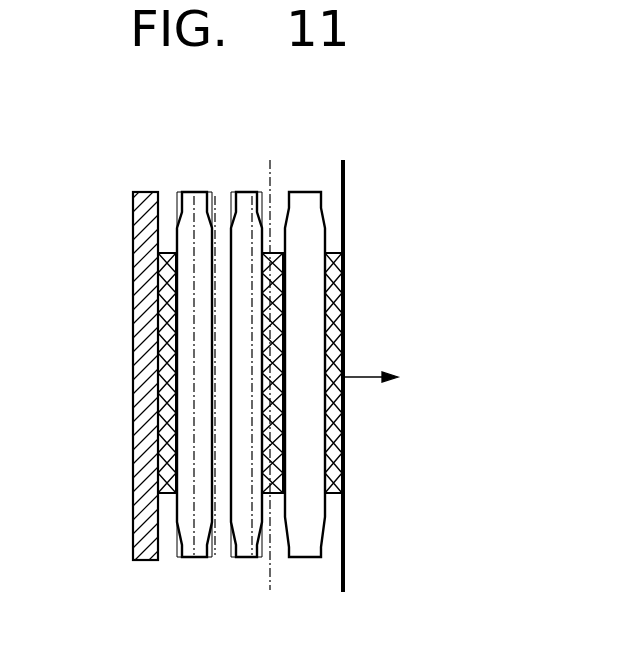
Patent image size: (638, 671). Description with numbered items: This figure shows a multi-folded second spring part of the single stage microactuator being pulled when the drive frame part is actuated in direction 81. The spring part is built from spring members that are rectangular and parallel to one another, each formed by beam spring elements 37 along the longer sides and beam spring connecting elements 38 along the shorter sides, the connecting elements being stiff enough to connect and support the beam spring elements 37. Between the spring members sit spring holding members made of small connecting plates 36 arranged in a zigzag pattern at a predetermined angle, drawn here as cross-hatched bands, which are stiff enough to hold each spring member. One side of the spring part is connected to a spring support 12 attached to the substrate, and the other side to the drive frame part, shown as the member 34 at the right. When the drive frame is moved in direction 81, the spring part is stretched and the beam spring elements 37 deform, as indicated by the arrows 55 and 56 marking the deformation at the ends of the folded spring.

The spring support 12 is at (145, 190).
The plate 34 is at (345, 178).
The small connecting plates 36 is at (333, 495).
The beam spring elements 37 is at (212, 220).
The beam spring connecting elements 38 is at (302, 192).
The direction arrow 55 is at (253, 573).
The direction arrow 56 is at (352, 538).
The actuation direction 81 is at (357, 377).